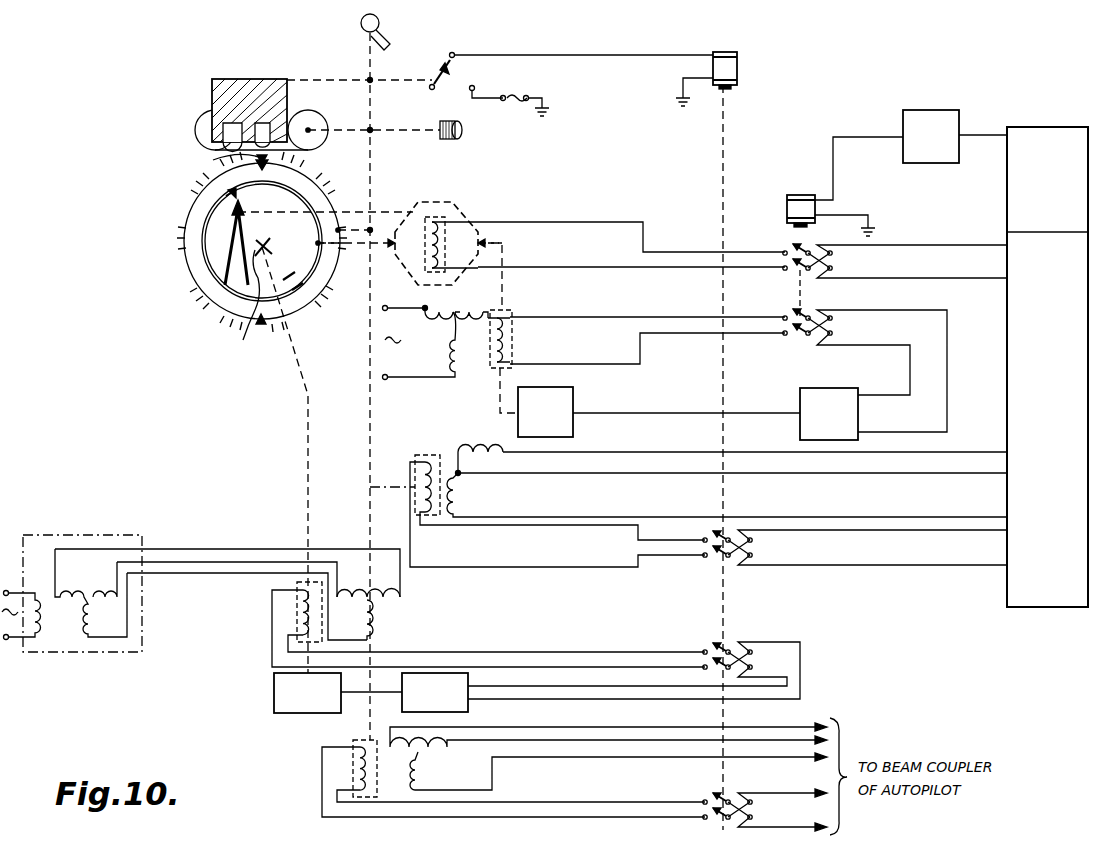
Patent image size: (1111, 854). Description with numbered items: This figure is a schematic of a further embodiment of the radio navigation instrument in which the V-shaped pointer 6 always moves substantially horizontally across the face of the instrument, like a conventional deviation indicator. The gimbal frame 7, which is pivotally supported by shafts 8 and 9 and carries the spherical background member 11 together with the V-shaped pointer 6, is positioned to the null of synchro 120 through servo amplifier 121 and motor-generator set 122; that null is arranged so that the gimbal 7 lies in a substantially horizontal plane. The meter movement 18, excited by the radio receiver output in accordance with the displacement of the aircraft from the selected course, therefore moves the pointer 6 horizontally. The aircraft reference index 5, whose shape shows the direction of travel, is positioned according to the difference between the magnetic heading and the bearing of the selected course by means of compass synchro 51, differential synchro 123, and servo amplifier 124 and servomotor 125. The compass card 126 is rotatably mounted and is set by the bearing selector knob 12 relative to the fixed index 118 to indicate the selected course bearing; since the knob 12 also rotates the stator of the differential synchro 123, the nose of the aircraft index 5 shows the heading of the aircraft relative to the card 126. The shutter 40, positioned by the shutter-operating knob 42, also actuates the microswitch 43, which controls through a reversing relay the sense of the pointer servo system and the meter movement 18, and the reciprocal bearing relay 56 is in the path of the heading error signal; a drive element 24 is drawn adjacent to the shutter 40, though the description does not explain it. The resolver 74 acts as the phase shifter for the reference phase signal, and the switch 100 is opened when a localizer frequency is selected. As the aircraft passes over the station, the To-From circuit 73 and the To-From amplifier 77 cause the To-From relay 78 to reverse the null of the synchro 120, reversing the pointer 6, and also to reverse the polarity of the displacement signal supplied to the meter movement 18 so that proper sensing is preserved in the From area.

The aircraft reference index 5 is at (244, 303).
The V-shaped pointer 6 is at (222, 258).
The gimbal frame 7 is at (470, 208).
The shaft 8 is at (352, 250).
The shaft 9 is at (504, 247).
The background member 11 is at (303, 297).
The bearing selector knob 12 is at (463, 132).
The meter movement 18 is at (440, 215).
The drive wheel 24 is at (322, 115).
The shutter 40 is at (212, 92).
The shutter-operating knob 42 is at (382, 27).
The microswitch 43 is at (462, 82).
The compass synchro 51 is at (40, 536).
The reciprocal bearing relay 56 is at (740, 68).
The To-From circuit 73 is at (1027, 120).
The resolver 74 is at (436, 452).
The To-From relay amplifier 77 is at (925, 108).
The To-From sensitive relay 78 is at (787, 197).
The switch 100 is at (428, 773).
The fixed index 118 is at (223, 158).
The synchro 120 is at (512, 338).
The servo amplifier 121 is at (820, 372).
The motor-generator set 122 is at (575, 398).
The differential synchro 123 is at (385, 622).
The servo amplifier 124 is at (468, 676).
The servomotor 125 is at (274, 696).
The compass card 126 is at (215, 197).